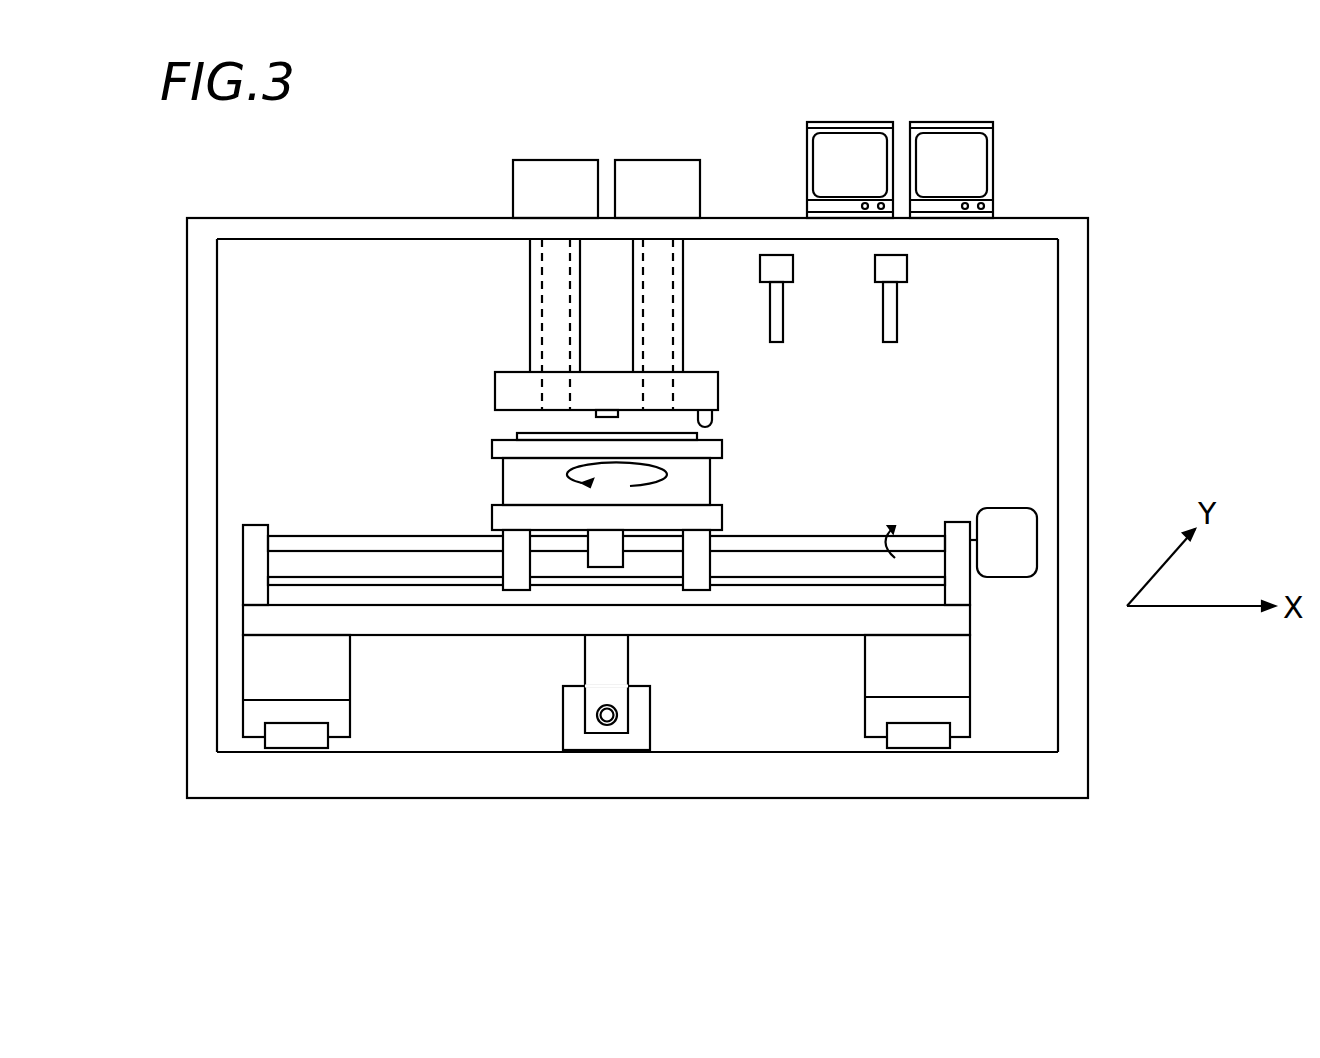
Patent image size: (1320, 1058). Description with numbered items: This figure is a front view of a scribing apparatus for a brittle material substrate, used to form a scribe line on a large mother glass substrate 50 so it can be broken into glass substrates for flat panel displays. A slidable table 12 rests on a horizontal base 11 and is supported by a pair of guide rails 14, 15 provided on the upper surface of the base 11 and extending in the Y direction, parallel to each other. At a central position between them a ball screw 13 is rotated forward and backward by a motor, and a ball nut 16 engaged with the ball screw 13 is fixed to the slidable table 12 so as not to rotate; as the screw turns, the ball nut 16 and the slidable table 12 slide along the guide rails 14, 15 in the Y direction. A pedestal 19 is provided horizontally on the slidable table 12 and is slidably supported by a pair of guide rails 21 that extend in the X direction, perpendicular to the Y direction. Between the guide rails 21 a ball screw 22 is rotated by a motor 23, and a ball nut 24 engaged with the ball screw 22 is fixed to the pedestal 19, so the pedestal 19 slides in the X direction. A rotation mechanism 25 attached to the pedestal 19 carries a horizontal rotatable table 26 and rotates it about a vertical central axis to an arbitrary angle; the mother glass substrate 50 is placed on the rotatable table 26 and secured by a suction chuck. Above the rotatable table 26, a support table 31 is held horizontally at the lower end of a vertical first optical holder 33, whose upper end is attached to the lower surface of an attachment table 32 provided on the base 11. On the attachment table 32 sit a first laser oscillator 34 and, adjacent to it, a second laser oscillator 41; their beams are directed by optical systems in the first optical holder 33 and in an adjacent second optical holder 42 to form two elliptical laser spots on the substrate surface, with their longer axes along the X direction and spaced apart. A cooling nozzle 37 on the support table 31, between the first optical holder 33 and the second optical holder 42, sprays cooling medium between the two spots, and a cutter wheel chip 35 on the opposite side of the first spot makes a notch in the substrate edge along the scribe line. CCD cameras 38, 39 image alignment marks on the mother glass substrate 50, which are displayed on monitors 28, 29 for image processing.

The base 11 is at (815, 780).
The slidable table 12 is at (970, 622).
The ball screw 13 is at (597, 717).
The guide rail 14 is at (308, 732).
The guide rail 15 is at (893, 733).
The ball nut 16 is at (585, 672).
The pedestal 19 is at (722, 517).
The guide rails 21 is at (375, 578).
The ball screw 22 is at (308, 537).
The motor 23 is at (1003, 508).
The ball nut 24 is at (608, 555).
The rotation mechanism 25 is at (503, 485).
The rotatable table 26 is at (722, 450).
The monitor 28 is at (862, 122).
The monitor 29 is at (938, 122).
The support table 31 is at (718, 388).
The attachment table 32 is at (373, 220).
The first optical holder 33 is at (680, 313).
The first laser oscillator 34 is at (695, 178).
The cutter wheel chip 35 is at (712, 420).
The cooling nozzle 37 is at (598, 418).
The CCD camera 38 is at (788, 318).
The CCD camera 39 is at (898, 318).
The second laser oscillator 41 is at (522, 174).
The second optical holder 42 is at (535, 305).
The mother glass substrate 50 is at (517, 436).